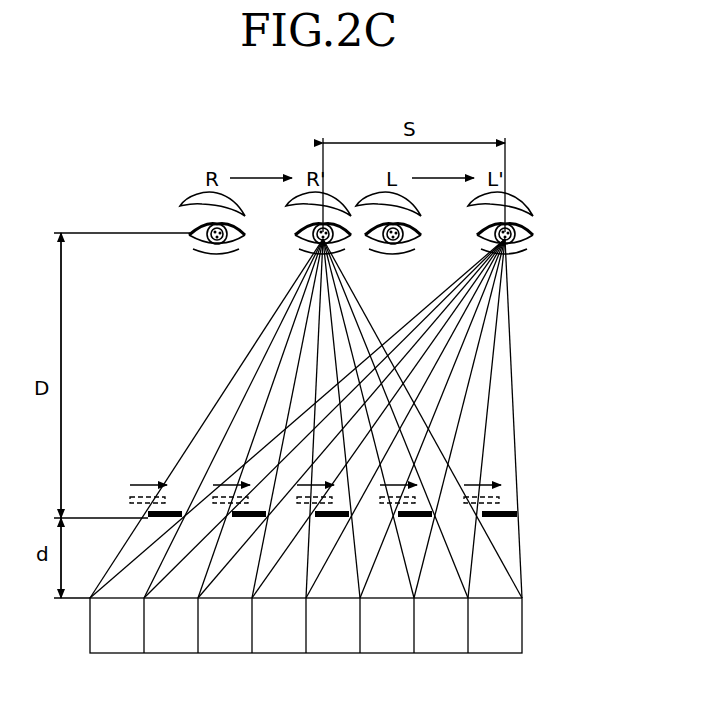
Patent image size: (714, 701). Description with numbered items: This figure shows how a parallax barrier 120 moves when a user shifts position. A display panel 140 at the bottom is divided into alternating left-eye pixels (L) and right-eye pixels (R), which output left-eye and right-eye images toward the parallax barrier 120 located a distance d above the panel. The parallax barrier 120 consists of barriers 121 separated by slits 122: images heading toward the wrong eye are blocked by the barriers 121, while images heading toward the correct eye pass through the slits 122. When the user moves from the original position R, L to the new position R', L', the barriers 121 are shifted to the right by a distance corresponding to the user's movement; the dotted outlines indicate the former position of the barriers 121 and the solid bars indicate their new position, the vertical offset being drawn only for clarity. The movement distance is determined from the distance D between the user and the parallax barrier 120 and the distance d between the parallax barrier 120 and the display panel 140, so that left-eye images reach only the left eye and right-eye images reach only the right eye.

The parallax barrier 120 is at (386, 495).
The barriers 121 is at (517, 513).
The slits 122 is at (457, 513).
The display panel 140 is at (522, 625).